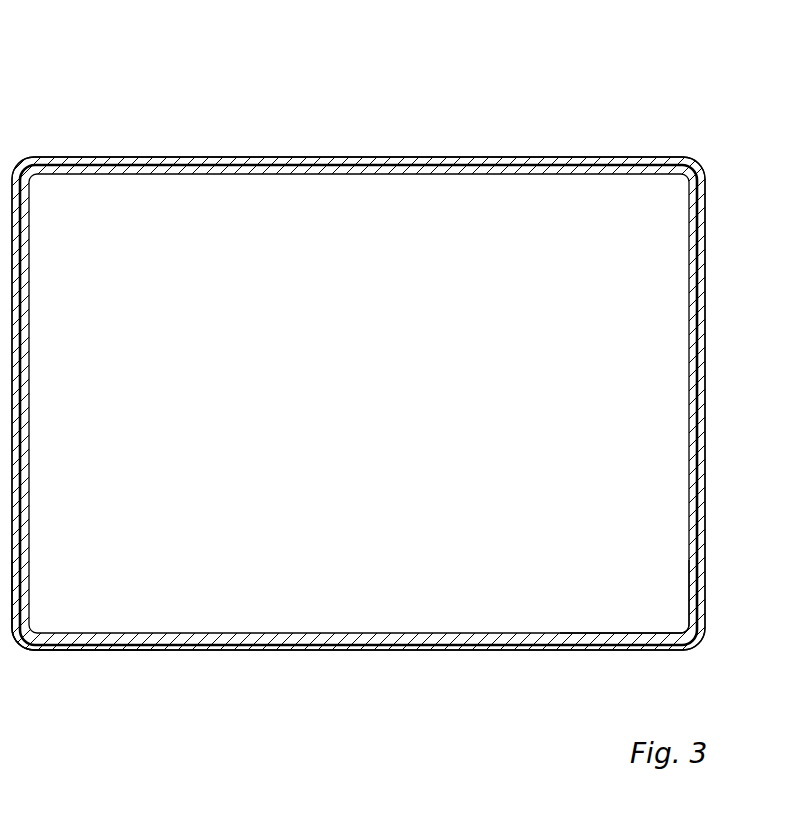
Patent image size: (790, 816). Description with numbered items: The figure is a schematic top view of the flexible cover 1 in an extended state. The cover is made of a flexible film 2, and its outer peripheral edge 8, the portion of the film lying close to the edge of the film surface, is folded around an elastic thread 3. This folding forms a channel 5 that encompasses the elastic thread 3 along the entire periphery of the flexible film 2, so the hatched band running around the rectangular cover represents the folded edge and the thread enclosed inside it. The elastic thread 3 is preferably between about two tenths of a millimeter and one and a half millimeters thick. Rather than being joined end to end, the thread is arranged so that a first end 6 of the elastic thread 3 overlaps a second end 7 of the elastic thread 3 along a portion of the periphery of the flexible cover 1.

The flexible cover 1 is at (288, 670).
The flexible film 2 is at (405, 198).
The elastic thread 3 is at (114, 648).
The channel 5 is at (449, 648).
The first end 6 is at (636, 158).
The second end 7 is at (629, 640).
The outer peripheral edge 8 is at (348, 157).